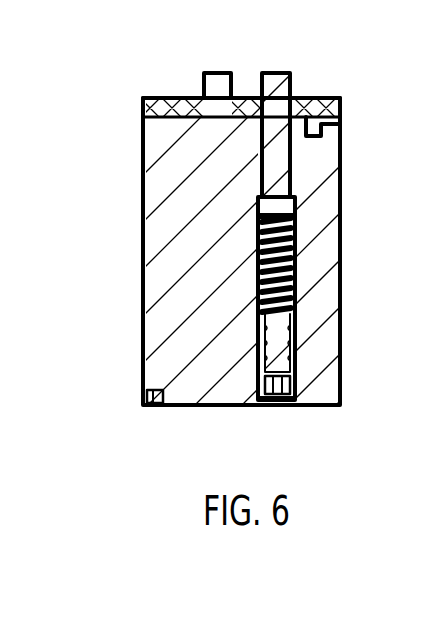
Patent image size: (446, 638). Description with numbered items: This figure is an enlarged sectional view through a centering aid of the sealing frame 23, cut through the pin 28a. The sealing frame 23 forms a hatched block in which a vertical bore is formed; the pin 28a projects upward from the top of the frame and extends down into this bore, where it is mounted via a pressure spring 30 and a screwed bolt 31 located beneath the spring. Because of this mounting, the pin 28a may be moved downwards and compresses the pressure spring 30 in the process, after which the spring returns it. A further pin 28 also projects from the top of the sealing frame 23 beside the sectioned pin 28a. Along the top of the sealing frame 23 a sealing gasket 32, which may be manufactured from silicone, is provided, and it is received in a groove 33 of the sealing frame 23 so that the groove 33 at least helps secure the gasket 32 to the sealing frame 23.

The sealing frame 23 is at (322, 298).
The pin 28 is at (219, 82).
The pin 28a is at (277, 84).
The pressure spring 30 is at (300, 248).
The screwed bolt 31 is at (277, 348).
The sealing gasket 32 is at (325, 107).
The groove 33 is at (322, 134).